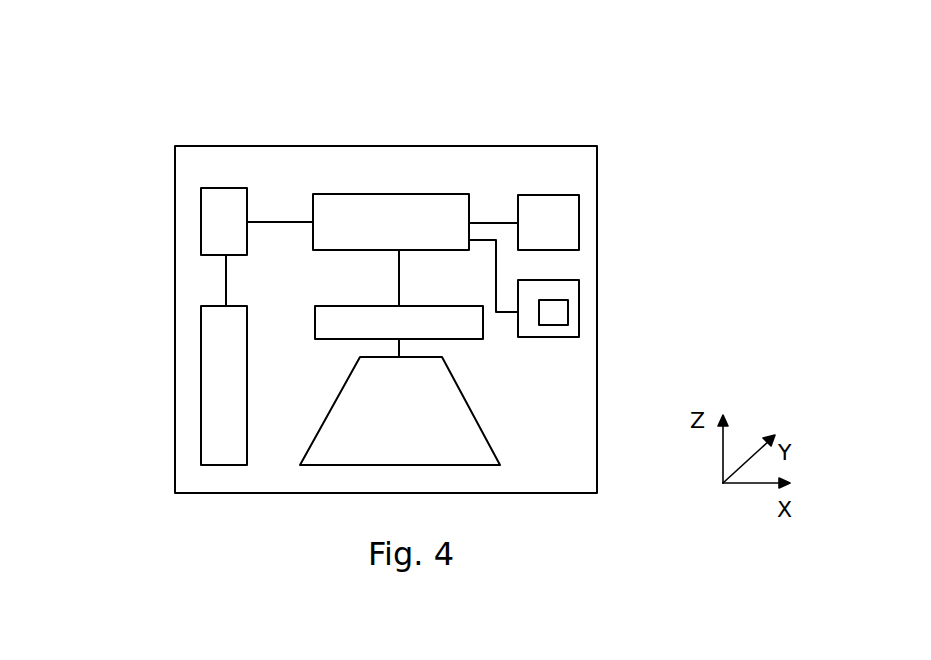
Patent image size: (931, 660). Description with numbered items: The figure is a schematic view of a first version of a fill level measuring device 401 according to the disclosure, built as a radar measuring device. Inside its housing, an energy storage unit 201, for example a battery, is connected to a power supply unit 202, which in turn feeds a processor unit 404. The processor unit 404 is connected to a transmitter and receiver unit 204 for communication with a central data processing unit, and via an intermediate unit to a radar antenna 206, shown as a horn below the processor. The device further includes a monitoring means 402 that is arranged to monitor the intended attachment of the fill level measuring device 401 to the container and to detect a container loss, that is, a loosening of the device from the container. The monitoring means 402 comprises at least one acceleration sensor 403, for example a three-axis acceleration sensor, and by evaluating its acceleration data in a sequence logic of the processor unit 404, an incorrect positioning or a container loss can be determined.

The fill level measuring device 401 is at (470, 146).
The processor unit 404 is at (361, 194).
The power supply unit 202 is at (201, 233).
The energy storage unit 201 is at (201, 387).
The transmitter and receiver unit 204 is at (579, 215).
The monitoring means 402 is at (579, 285).
The acceleration sensor 403 is at (568, 312).
The radar antenna 206 is at (480, 429).